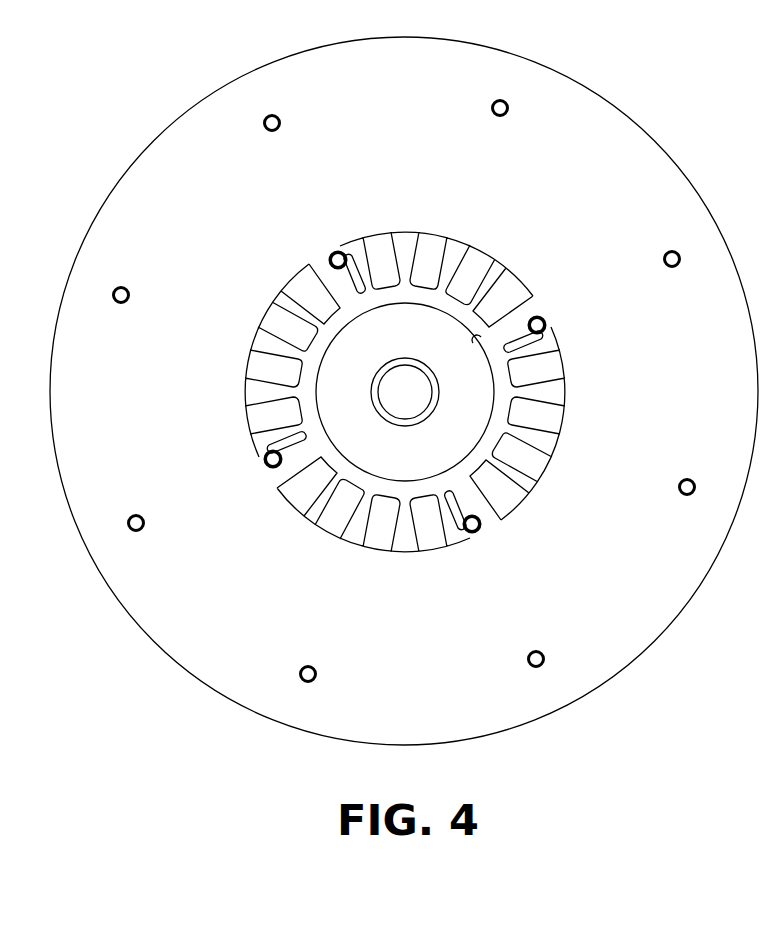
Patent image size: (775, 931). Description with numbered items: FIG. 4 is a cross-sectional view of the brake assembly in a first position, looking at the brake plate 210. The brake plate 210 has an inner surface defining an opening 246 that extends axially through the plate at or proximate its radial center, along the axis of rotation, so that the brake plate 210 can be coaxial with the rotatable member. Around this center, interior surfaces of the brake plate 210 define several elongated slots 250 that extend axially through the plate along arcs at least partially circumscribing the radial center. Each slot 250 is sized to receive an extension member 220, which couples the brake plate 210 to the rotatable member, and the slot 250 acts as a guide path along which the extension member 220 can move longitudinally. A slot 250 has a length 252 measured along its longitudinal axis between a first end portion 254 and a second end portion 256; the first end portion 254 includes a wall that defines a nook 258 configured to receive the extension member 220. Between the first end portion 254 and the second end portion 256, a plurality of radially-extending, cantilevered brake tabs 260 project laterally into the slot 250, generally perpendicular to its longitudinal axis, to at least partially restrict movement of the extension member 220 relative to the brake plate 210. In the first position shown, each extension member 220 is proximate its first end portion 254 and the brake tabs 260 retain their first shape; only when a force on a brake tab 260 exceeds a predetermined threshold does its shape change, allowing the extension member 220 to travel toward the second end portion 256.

The brake plate 210 is at (715, 165).
The extension member 220 is at (472, 533).
The opening 246 is at (476, 346).
The slot 250 is at (431, 367).
The length 252 is at (344, 255).
The first end portion 254 is at (277, 482).
The second end portion 256 is at (311, 271).
The nook 258 is at (259, 466).
The brake tab 260 is at (549, 346).